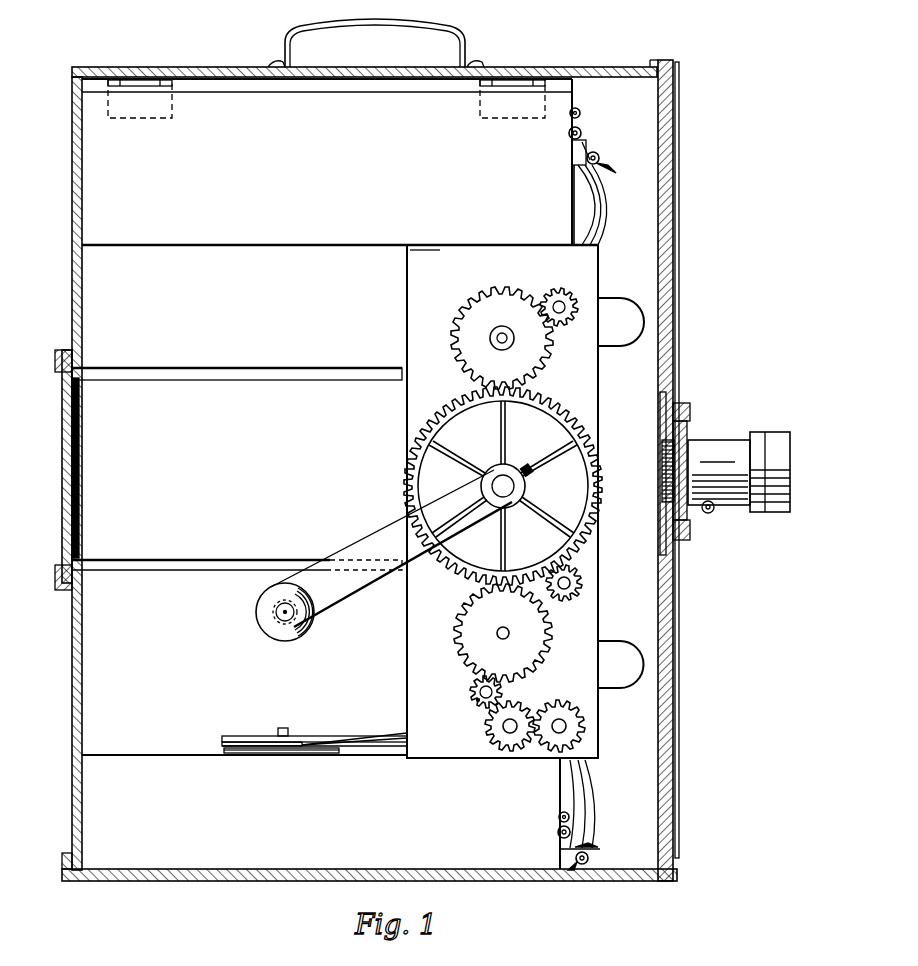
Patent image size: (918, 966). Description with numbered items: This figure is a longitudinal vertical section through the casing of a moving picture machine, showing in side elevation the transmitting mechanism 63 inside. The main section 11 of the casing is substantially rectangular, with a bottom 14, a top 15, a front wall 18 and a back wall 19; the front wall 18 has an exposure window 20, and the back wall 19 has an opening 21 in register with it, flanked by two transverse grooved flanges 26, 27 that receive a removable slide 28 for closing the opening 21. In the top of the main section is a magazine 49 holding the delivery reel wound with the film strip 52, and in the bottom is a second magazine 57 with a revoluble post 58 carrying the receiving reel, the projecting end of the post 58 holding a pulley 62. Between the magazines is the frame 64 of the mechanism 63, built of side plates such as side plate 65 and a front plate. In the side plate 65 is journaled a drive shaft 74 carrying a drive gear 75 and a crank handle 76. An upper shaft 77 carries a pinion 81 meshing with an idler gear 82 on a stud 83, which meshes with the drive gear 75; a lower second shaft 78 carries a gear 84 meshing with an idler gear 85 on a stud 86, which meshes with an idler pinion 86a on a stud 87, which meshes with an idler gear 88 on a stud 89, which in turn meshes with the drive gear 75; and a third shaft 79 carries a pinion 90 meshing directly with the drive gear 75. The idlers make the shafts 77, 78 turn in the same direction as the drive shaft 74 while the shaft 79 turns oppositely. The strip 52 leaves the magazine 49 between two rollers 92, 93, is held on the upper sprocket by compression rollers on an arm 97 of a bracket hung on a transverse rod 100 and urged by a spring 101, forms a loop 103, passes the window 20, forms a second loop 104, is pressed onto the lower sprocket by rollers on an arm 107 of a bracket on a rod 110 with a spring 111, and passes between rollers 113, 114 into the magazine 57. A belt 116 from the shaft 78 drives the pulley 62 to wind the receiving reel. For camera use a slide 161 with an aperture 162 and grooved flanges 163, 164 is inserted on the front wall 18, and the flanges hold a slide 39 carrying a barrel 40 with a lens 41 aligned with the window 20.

The main section 11 is at (72, 258).
The bottom 14 is at (258, 872).
The top 15 is at (204, 77).
The front wall 18 is at (658, 264).
The back wall 19 is at (80, 178).
The exposure window 20 is at (662, 498).
The opening 21 is at (80, 514).
The grooved flange 26 is at (58, 578).
The grooved flange 27 is at (56, 360).
The removable slide 28 is at (68, 462).
The slide 39 is at (689, 428).
The barrel 40 is at (712, 444).
The lens 41 is at (762, 470).
The magazine 49 is at (218, 247).
The film strip 52 is at (572, 202).
The second magazine 57 is at (121, 756).
The revoluble post 58 is at (282, 728).
The pulley 62 is at (226, 736).
The transmitting mechanism 63 is at (406, 470).
The frame 64 is at (408, 281).
The side plate 65 is at (426, 296).
The drive shaft 74 is at (502, 487).
The drive gear 75 is at (406, 481).
The crank handle 76 is at (380, 546).
The shaft 77 is at (560, 300).
The second shaft 78 is at (580, 726).
The third shaft 79 is at (578, 583).
The pinion 81 is at (566, 316).
The idler gear 82 is at (534, 362).
The stud 83 is at (502, 334).
The gear 84 is at (566, 712).
The idler gear 85 is at (490, 736).
The stud 86 is at (514, 720).
The idler pinion 86a is at (477, 701).
The stud 87 is at (480, 692).
The idler gear 88 is at (476, 632).
The stud 89 is at (500, 638).
The pinion 90 is at (570, 600).
The roller 92 is at (580, 110).
The roller 93 is at (582, 130).
The arm 97 is at (596, 208).
The transverse rod 100 is at (598, 154).
The spring 101 is at (603, 160).
The loop 103 is at (618, 306).
The second loop 104 is at (617, 648).
The arm 107 is at (594, 802).
The transverse rod 110 is at (590, 858).
The spring 111 is at (595, 846).
The roller 113 is at (560, 813).
The roller 114 is at (560, 830).
The belt 116 is at (368, 738).
The slide 161 is at (679, 228).
The aperture 162 is at (668, 472).
The grooved flange 163 is at (684, 536).
The grooved flange 164 is at (684, 405).